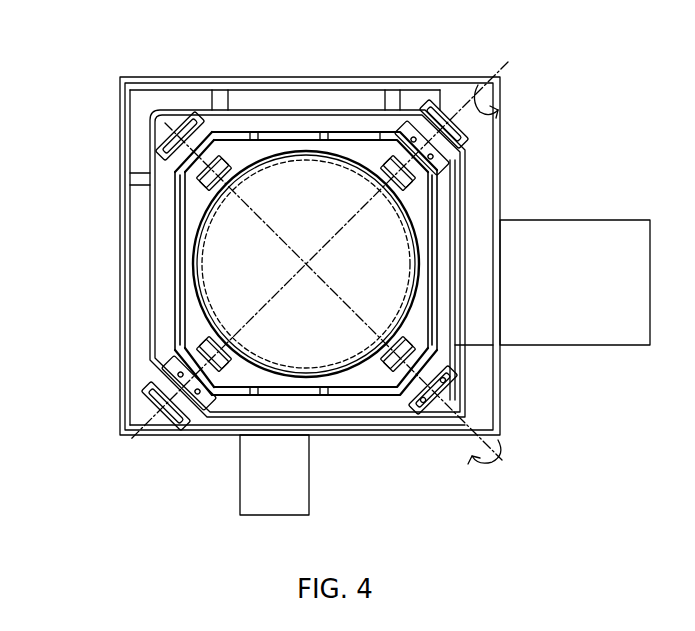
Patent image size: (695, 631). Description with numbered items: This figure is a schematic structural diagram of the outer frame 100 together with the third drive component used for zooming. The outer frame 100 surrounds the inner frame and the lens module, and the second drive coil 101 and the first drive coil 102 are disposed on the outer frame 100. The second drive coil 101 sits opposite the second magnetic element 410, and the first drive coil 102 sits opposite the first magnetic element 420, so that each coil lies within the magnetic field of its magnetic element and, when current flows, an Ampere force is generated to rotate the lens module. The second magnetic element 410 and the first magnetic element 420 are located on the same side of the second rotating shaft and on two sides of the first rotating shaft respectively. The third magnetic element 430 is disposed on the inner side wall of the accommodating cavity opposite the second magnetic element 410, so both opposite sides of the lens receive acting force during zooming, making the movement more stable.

The outer frame 100 is at (482, 160).
The second drive coil 101 is at (140, 232).
The first drive coil 102 is at (283, 95).
The second magnetic element 410 is at (170, 262).
The first magnetic element 420 is at (325, 110).
The third magnetic element 430 is at (440, 293).